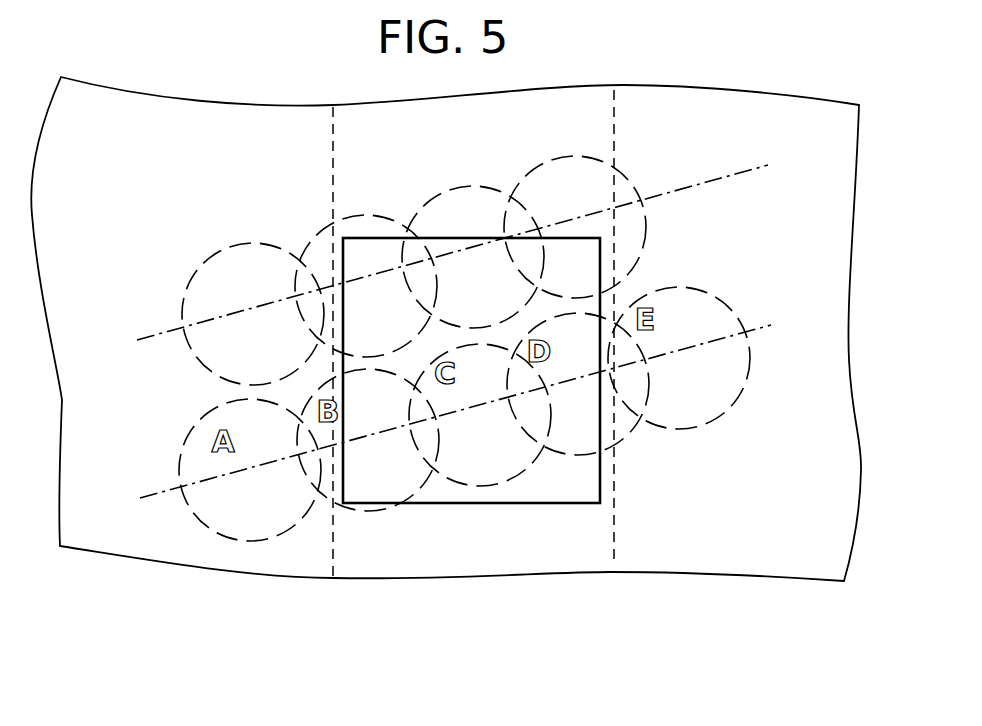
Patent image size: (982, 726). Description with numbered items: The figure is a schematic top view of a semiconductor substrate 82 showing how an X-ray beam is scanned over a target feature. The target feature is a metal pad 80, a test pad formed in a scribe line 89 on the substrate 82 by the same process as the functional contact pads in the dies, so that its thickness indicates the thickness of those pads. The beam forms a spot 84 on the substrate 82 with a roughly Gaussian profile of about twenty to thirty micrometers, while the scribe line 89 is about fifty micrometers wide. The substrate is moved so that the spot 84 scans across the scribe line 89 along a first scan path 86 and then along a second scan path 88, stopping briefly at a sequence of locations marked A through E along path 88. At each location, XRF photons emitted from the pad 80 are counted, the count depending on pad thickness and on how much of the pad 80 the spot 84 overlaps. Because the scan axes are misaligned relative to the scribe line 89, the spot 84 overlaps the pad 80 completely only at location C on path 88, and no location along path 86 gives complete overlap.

The metal pad 80 is at (603, 488).
The semiconductor substrate 82 is at (171, 185).
The spot 84 is at (407, 228).
The scan path 86 is at (694, 185).
The scan path 88 is at (748, 330).
The scribe line 89 is at (610, 583).